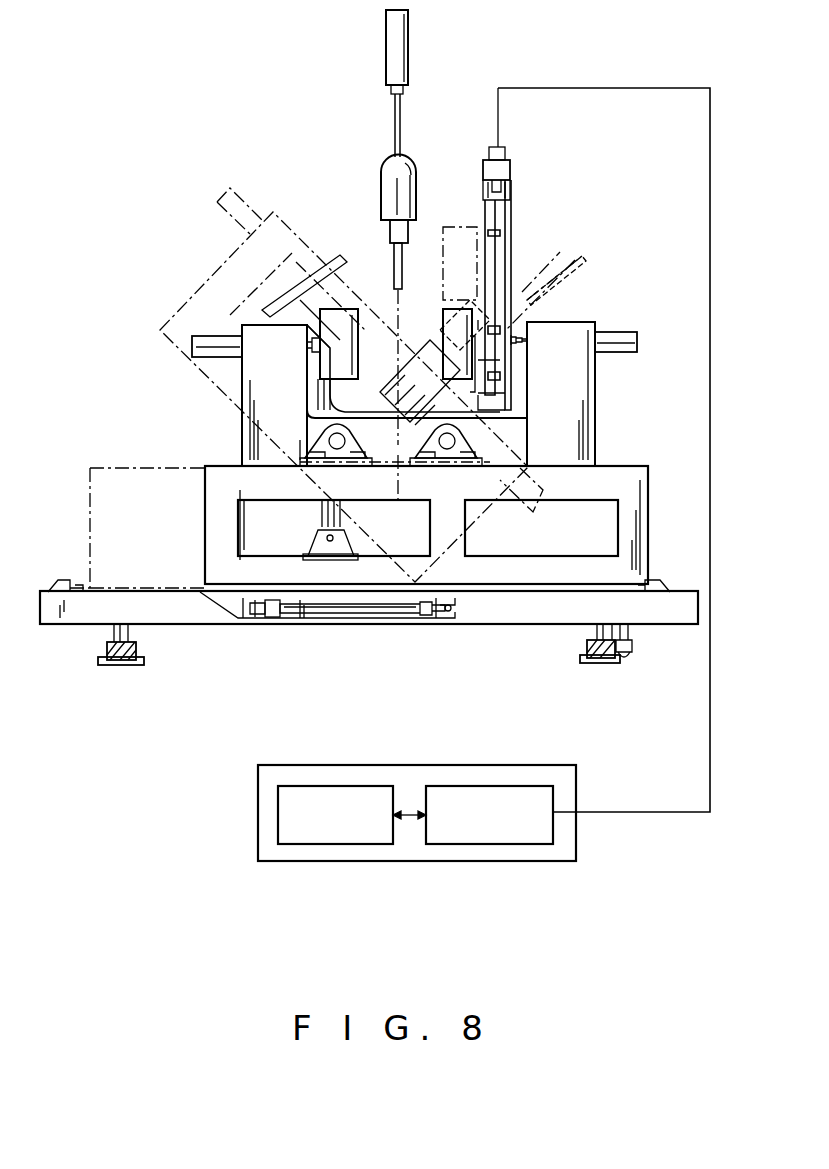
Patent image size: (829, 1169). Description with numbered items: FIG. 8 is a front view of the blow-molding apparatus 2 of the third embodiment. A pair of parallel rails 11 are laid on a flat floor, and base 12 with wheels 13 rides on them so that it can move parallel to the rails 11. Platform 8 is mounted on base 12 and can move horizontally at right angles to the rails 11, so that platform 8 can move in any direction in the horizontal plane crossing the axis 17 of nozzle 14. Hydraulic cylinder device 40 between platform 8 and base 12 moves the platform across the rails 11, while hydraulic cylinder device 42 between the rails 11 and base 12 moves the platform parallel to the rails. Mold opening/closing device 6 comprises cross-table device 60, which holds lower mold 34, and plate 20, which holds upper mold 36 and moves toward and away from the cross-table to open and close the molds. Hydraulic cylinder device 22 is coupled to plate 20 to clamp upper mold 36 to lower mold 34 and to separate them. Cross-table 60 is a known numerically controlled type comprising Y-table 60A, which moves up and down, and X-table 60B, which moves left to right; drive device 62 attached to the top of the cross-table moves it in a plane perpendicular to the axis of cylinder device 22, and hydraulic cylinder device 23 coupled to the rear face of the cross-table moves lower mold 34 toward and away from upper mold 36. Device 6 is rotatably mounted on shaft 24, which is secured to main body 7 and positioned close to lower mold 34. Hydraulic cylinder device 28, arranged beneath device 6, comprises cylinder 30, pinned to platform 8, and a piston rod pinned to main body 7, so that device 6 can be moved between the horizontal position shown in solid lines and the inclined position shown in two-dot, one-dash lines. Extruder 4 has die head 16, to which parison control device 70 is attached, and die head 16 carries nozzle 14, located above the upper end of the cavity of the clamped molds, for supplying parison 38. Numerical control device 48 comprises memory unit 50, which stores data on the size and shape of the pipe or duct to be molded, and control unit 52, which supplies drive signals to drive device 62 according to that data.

The machine tool 2 is at (266, 119).
The extruder 4 is at (394, 197).
The mold opening/closing device 6 is at (212, 403).
The main body 7 is at (592, 397).
The platform 8 is at (449, 519).
The rails 11 is at (125, 665).
The base 12 is at (370, 618).
The wheels 13 is at (130, 636).
The nozzle 14 is at (392, 233).
The die head 16 is at (416, 178).
The axis 17 is at (395, 192).
The plate 20 is at (326, 362).
The hydraulic cylinder device 22 is at (197, 344).
The hydraulic cylinder device 23 is at (626, 336).
The shaft 24 is at (470, 440).
The hydraulic cylinder device 28 is at (314, 518).
The cylinder 30 is at (345, 511).
The lower mold 34 is at (450, 333).
The upper mold 36 is at (352, 322).
The parison 38 is at (396, 265).
The hydraulic cylinder device 40 is at (336, 613).
The hydraulic cylinder device 42 is at (632, 655).
The numerical control device 48 is at (388, 832).
The memory unit 50 is at (325, 786).
The control unit 52 is at (490, 786).
The cross-table device 60 is at (537, 294).
The Y-table 60A is at (491, 308).
The X-table 60B is at (482, 312).
The drive device 62 is at (512, 168).
The parison control device 70 is at (392, 33).